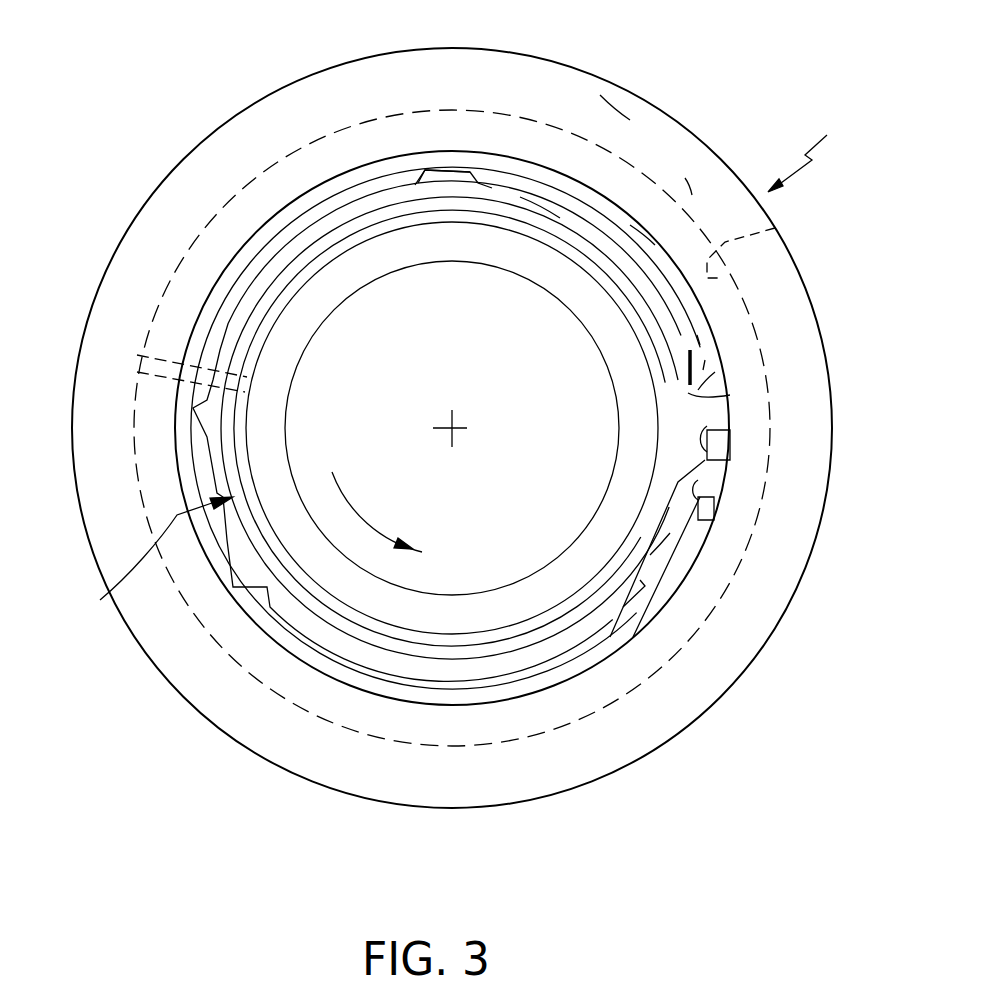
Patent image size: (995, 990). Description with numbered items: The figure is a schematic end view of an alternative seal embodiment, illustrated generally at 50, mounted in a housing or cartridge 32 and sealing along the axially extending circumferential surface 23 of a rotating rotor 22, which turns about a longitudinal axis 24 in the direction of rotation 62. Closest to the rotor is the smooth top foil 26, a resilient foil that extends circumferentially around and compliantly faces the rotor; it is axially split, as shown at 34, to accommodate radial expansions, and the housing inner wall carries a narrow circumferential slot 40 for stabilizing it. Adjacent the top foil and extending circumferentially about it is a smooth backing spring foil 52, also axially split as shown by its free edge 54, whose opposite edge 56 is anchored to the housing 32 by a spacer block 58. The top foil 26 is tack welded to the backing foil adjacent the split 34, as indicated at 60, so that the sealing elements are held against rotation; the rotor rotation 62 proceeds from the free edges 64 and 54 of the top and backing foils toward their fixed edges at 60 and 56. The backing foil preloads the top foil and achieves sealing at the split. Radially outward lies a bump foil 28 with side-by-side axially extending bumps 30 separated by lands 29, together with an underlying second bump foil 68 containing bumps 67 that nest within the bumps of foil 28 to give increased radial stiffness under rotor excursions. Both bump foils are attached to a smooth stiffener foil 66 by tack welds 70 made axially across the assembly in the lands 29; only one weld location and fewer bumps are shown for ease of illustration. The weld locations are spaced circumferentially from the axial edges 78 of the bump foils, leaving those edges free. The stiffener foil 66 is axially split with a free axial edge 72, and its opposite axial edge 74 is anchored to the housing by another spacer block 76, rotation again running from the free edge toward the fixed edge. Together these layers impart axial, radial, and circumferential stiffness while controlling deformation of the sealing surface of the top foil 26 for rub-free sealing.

The rotor 22 is at (478, 487).
The circumferential surface 23 is at (643, 230).
The longitudinal axis 24 is at (457, 425).
The smooth top foil 26 is at (597, 625).
The bump foil 28 is at (323, 197).
The lands 29 is at (528, 197).
The bumps 30 is at (203, 323).
The housing 32 is at (620, 103).
The axial split 34 is at (240, 389).
The circumferential slot 40 is at (775, 227).
The seal 50 is at (816, 149).
The smooth backing spring foil 52 is at (690, 180).
The free edge 54 is at (688, 393).
The opposite edge 56 is at (692, 427).
The spacer block 58 is at (720, 447).
The tack weld 60 is at (247, 365).
The rotation 62 is at (343, 490).
The free edge 64 is at (245, 402).
The smooth stiffener foil 66 is at (670, 533).
The bumps 67 is at (193, 408).
The second bump foil 68 is at (433, 173).
The tack welds 70 is at (148, 562).
The free axial edge 72 is at (715, 372).
The opposite axial edge 74 is at (705, 490).
The spacer block 76 is at (715, 520).
The axial edges 78 is at (705, 360).